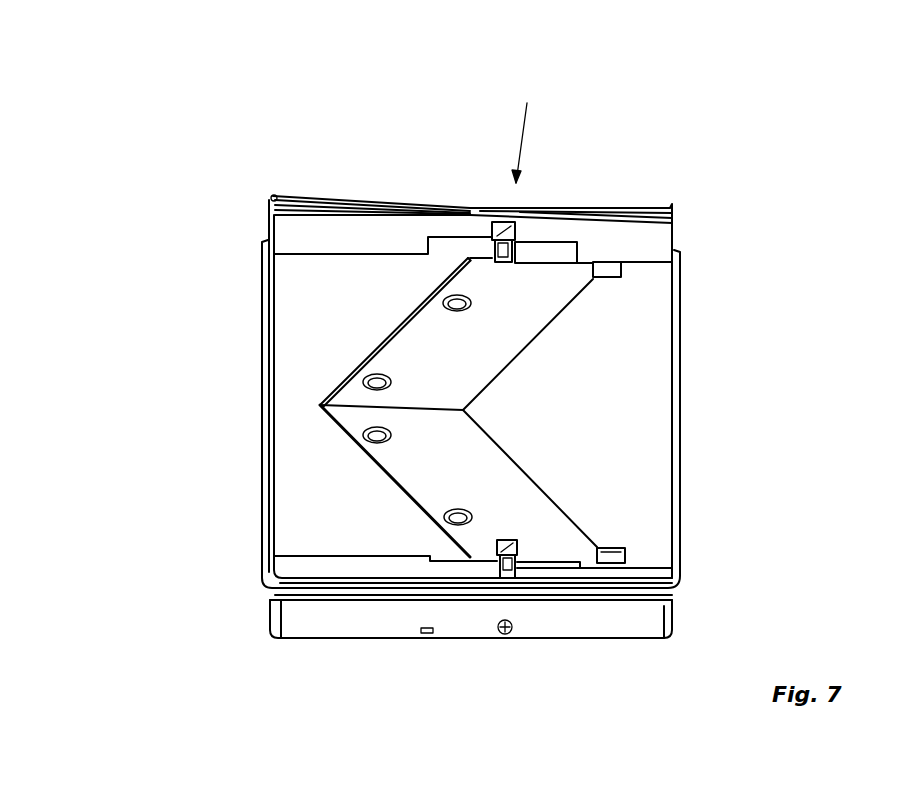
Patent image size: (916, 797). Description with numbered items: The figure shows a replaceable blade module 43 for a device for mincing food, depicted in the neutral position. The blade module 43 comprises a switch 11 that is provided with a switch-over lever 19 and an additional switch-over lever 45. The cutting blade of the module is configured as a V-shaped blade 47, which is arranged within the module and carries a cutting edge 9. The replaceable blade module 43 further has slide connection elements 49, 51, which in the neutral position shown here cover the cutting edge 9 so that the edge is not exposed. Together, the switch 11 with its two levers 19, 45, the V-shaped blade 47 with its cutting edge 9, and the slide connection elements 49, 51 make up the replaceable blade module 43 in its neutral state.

The switch 11 is at (480, 672).
The switch-over lever 19 is at (512, 230).
The additional switch-over lever 45 is at (547, 567).
The V-shaped blade 47 is at (447, 348).
The cutting edge 9 is at (497, 372).
The slide connection element 49 is at (642, 313).
The slide connection element 51 is at (310, 452).
The replaceable blade module 43 is at (725, 117).